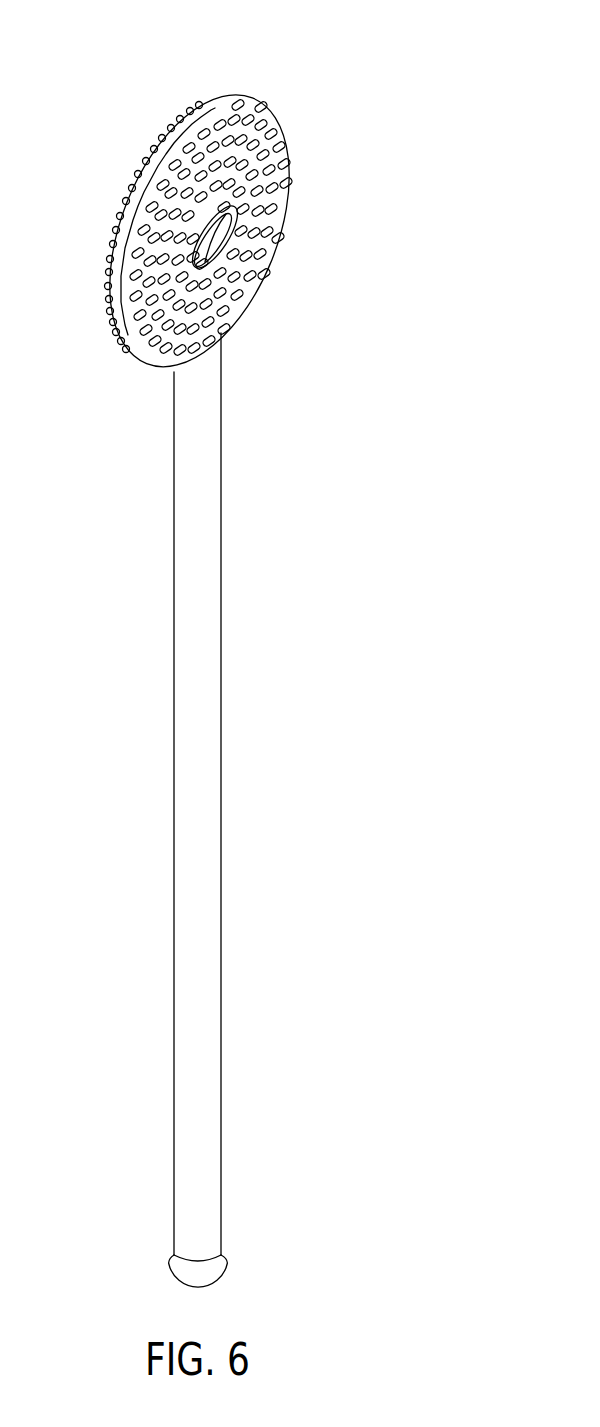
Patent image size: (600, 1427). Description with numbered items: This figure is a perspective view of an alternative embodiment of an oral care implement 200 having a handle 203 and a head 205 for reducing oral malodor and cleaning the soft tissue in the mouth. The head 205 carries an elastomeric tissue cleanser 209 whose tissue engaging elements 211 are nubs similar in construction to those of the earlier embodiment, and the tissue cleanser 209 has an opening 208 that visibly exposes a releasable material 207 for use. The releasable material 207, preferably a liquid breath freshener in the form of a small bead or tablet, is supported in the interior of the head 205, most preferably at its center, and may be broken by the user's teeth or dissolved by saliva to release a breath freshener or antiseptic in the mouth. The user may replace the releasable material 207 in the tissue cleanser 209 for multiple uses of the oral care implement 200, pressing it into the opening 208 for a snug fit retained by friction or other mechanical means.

The oral care implement 200 is at (392, 95).
The handle 203 is at (221, 757).
The head 205 is at (155, 82).
The releasable material 207 is at (220, 228).
The opening 208 is at (221, 270).
The tissue cleanser 209 is at (265, 272).
The tissue engaging elements 211 is at (120, 202).